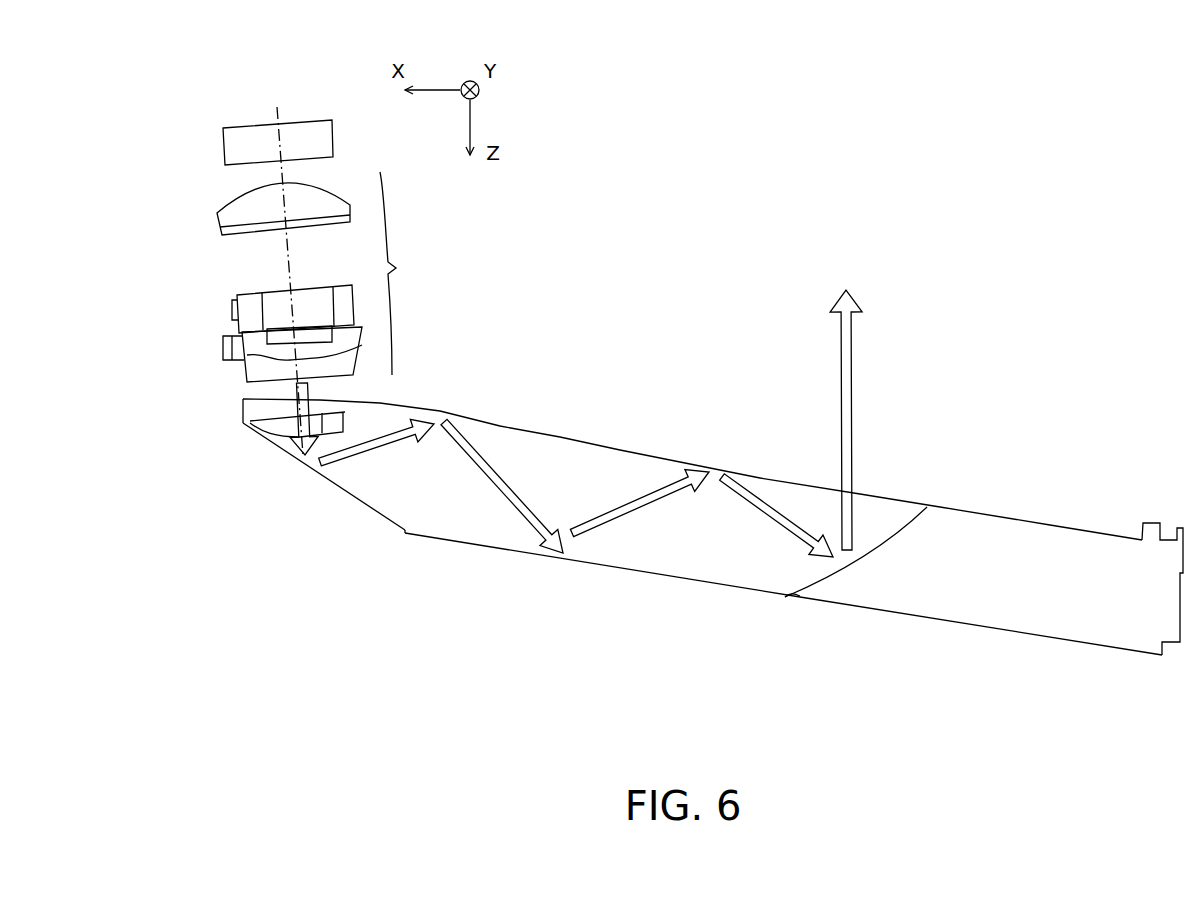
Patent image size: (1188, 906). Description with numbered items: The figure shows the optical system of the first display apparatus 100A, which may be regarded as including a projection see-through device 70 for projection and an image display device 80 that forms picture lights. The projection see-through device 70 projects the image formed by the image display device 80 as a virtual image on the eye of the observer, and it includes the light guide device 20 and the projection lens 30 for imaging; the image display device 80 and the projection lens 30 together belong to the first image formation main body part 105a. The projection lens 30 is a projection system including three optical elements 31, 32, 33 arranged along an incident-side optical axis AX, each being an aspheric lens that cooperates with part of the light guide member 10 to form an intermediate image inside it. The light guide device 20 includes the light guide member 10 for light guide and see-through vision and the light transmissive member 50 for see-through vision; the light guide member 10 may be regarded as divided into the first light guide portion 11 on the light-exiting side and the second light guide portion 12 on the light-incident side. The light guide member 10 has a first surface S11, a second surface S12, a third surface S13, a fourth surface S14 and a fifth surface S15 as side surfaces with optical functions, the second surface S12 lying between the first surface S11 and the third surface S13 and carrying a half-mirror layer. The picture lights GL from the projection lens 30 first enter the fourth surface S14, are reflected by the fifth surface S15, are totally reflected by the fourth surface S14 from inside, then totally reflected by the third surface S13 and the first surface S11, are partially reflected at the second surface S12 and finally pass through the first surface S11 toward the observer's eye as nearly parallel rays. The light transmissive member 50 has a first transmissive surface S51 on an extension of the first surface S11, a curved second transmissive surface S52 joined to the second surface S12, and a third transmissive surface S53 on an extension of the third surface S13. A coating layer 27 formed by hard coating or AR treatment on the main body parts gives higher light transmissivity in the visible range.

The first display apparatus 100A is at (744, 80).
The image display device 80 is at (262, 127).
The incident-side optical axis AX is at (280, 178).
The optical element (lens) 33 is at (228, 221).
The optical element (lens) 32 is at (240, 314).
The optical element (lens) 31 is at (250, 373).
The projection lens 30 is at (403, 273).
The projection see-through device 70 is at (513, 307).
The first image formation main body part 105a is at (684, 246).
The light guide member 10 is at (626, 370).
The picture lights GL is at (403, 530).
The fourth surface S14 is at (470, 412).
The coating layer 27 is at (650, 457).
The first surface S11 is at (764, 474).
The second transmissive surface S52 is at (902, 527).
The first transmissive surface S51 is at (1004, 518).
The fifth surface S15 is at (330, 493).
The second light guide portion 12 is at (437, 517).
The third surface S13 is at (591, 569).
The first light guide portion 11 is at (714, 571).
The light guide device 20 is at (645, 612).
The second surface S12 is at (790, 592).
The third transmissive surface S53 is at (921, 616).
The light transmissive member 50 is at (986, 606).